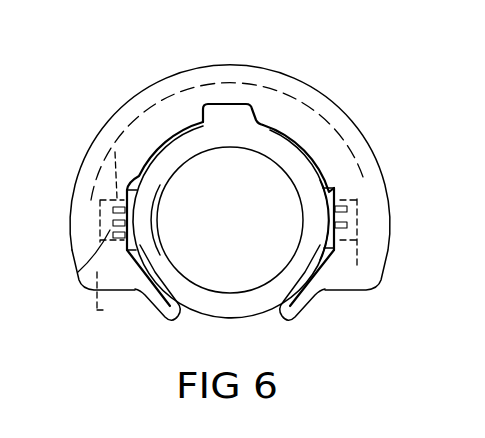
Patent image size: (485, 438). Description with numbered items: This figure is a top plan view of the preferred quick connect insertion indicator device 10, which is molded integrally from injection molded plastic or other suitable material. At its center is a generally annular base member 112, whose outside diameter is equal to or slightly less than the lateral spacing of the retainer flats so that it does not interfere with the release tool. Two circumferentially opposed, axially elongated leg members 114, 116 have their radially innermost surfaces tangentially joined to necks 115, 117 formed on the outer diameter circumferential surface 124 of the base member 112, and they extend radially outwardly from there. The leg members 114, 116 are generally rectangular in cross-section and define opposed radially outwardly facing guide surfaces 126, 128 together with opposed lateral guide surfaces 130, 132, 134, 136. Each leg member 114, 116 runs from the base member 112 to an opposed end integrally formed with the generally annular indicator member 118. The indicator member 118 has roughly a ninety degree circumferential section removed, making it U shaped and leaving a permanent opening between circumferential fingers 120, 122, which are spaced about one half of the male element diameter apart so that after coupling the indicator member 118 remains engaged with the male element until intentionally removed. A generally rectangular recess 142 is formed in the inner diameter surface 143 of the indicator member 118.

The insertion indicator device 10 is at (133, 55).
The base member 112 is at (153, 200).
The leg member 114 is at (350, 231).
The neck 115 is at (320, 220).
The leg member 116 is at (78, 272).
The neck 117 is at (153, 220).
The indicator member 118 is at (355, 142).
The circumferential finger 120 is at (158, 309).
The circumferential finger 122 is at (299, 309).
The outer diameter circumferential surface 124 is at (190, 309).
The radially outwardly facing guide surface 126 is at (84, 190).
The radially outwardly facing guide surface 128 is at (348, 207).
The lateral guide surface 130 is at (114, 156).
The lateral guide surface 132 is at (96, 310).
The lateral guide surface 134 is at (353, 182).
The lateral guide surface 136 is at (347, 256).
The rectangular recess 142 is at (211, 104).
The inner diameter surface 143 is at (270, 128).